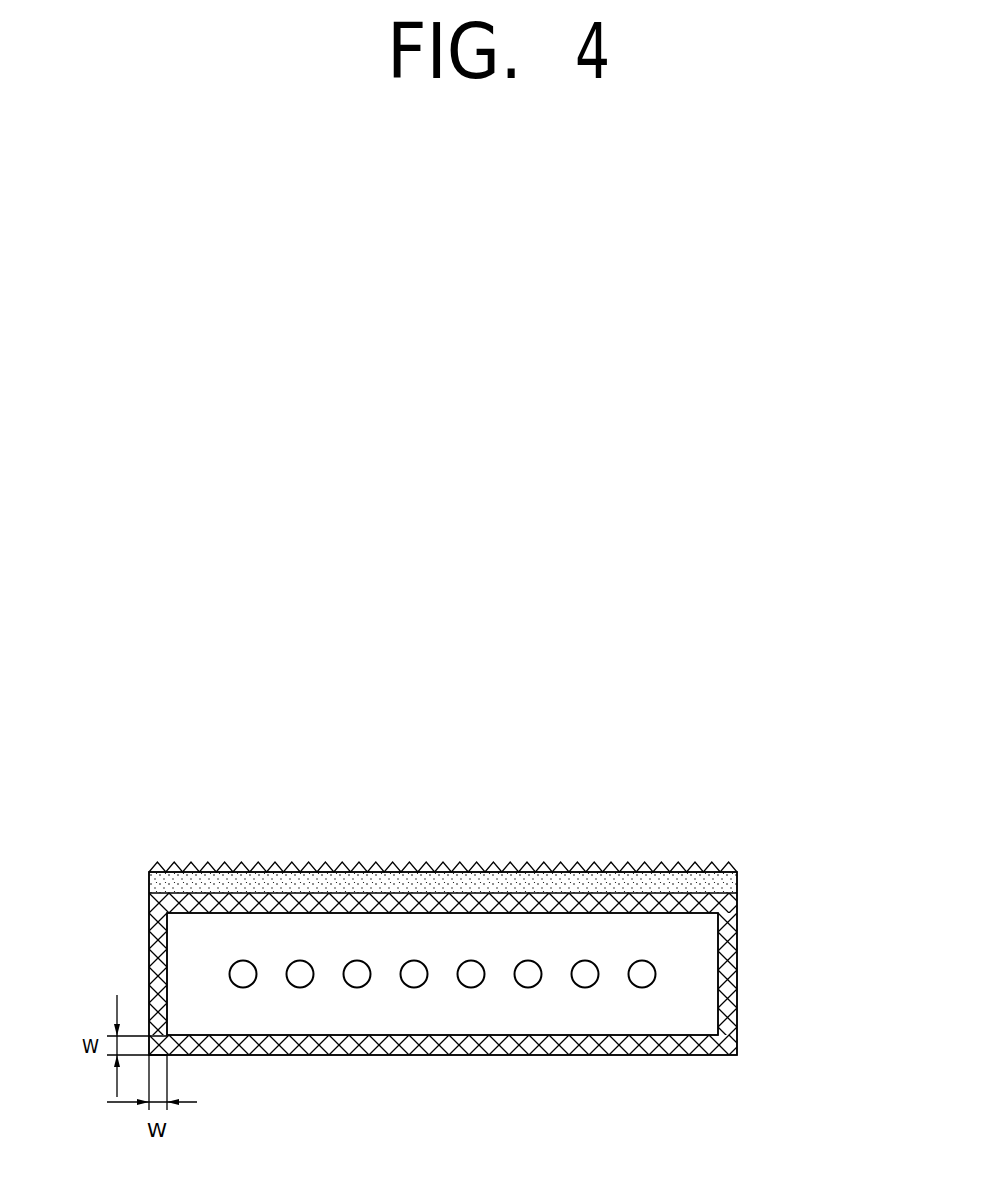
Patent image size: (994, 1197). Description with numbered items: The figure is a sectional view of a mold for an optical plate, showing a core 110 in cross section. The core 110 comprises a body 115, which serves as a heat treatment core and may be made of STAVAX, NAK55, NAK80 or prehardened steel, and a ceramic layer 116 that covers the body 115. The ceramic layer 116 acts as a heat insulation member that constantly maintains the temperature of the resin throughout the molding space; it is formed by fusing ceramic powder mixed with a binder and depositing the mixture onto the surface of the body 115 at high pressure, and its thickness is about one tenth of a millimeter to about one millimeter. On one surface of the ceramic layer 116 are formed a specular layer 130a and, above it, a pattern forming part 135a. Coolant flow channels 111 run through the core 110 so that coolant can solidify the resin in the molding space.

The core 110 is at (745, 665).
The pattern forming part 135a is at (730, 863).
The specular layer 130a is at (738, 880).
The ceramic layer 116 is at (735, 932).
The body 115 is at (710, 997).
The coolant flow channel 111 is at (643, 980).